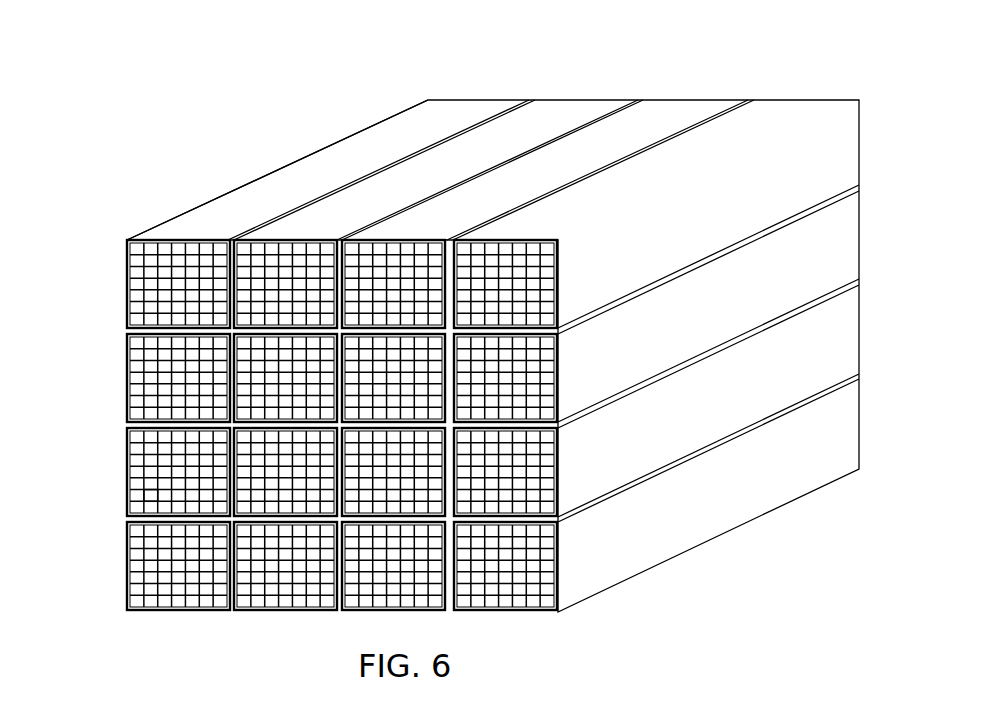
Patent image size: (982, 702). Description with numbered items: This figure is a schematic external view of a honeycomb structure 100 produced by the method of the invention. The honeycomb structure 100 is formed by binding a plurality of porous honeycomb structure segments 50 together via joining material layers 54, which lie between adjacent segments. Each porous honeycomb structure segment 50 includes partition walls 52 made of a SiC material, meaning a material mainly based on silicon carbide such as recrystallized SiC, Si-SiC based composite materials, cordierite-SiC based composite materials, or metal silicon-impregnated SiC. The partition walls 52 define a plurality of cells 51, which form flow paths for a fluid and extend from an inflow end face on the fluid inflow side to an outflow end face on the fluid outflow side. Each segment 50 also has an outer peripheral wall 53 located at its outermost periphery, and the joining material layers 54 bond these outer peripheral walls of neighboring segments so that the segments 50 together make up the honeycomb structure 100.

The honeycomb structure 100 is at (434, 313).
The porous honeycomb structure segment 50 is at (195, 228).
The cell 51 is at (172, 460).
The partition wall 52 is at (153, 497).
The outer peripheral wall 53 is at (560, 465).
The joining material layer 54 is at (533, 148).